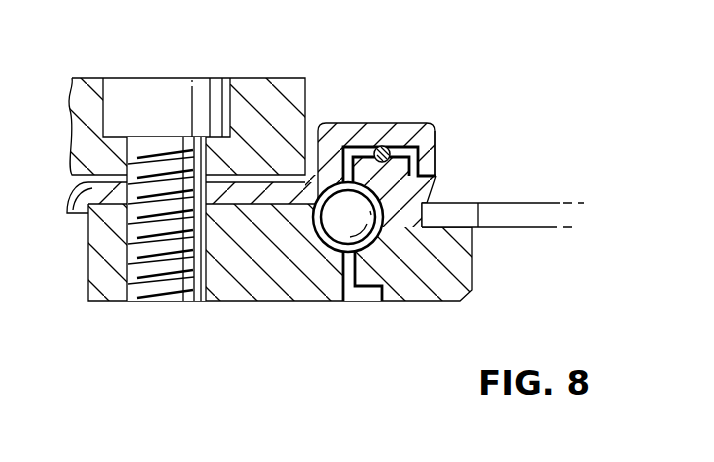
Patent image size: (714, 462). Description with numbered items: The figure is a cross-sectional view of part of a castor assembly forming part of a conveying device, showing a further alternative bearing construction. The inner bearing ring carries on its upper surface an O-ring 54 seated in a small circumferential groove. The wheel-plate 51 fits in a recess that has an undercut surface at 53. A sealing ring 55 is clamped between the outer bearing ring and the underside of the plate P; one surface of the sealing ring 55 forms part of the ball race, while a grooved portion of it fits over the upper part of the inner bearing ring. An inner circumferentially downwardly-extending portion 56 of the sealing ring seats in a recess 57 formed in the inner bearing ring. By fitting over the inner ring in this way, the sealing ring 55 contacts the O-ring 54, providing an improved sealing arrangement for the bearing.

The plate P is at (277, 95).
The wheel-plate 51 is at (545, 214).
The undercut surface 53 is at (430, 186).
The O-ring 54 is at (384, 148).
The sealing ring 55 is at (337, 142).
The inner circumferentially downwardly-extending portion 56 is at (434, 146).
The recess 57 is at (408, 173).